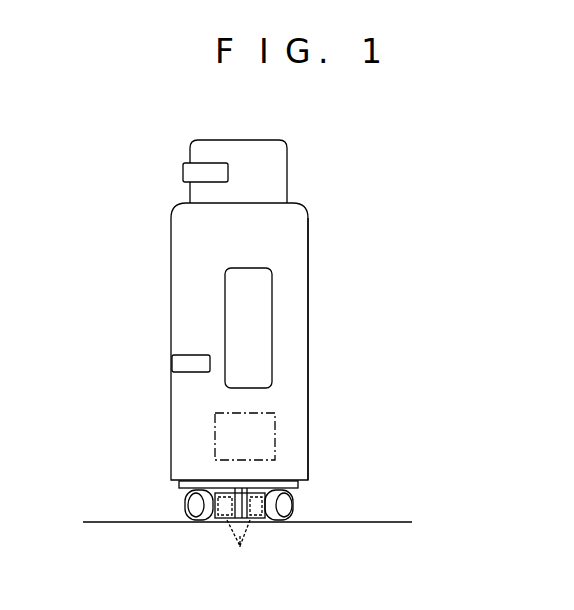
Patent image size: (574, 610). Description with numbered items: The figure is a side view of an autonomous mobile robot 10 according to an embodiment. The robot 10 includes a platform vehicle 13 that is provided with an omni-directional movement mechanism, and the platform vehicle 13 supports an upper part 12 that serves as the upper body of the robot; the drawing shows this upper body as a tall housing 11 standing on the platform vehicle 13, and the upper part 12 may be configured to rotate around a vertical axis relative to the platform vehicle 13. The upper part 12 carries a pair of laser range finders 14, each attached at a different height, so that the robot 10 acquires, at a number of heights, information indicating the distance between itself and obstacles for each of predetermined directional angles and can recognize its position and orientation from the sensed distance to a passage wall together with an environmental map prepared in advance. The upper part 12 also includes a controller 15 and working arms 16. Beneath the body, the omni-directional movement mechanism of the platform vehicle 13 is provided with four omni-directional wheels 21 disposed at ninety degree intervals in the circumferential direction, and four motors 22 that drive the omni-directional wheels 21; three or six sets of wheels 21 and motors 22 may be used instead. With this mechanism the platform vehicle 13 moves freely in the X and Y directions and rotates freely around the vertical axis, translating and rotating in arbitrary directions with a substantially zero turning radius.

The autonomous mobile robot 10 is at (366, 177).
The housing 11 is at (171, 290).
The upper part 12 is at (304, 308).
The platform vehicle 13 is at (312, 503).
The laser range finder 14 is at (183, 172).
The controller 15 is at (215, 440).
The working arms 16 is at (260, 353).
The omni-directional wheel 21 is at (187, 512).
The motor 22 is at (237, 548).